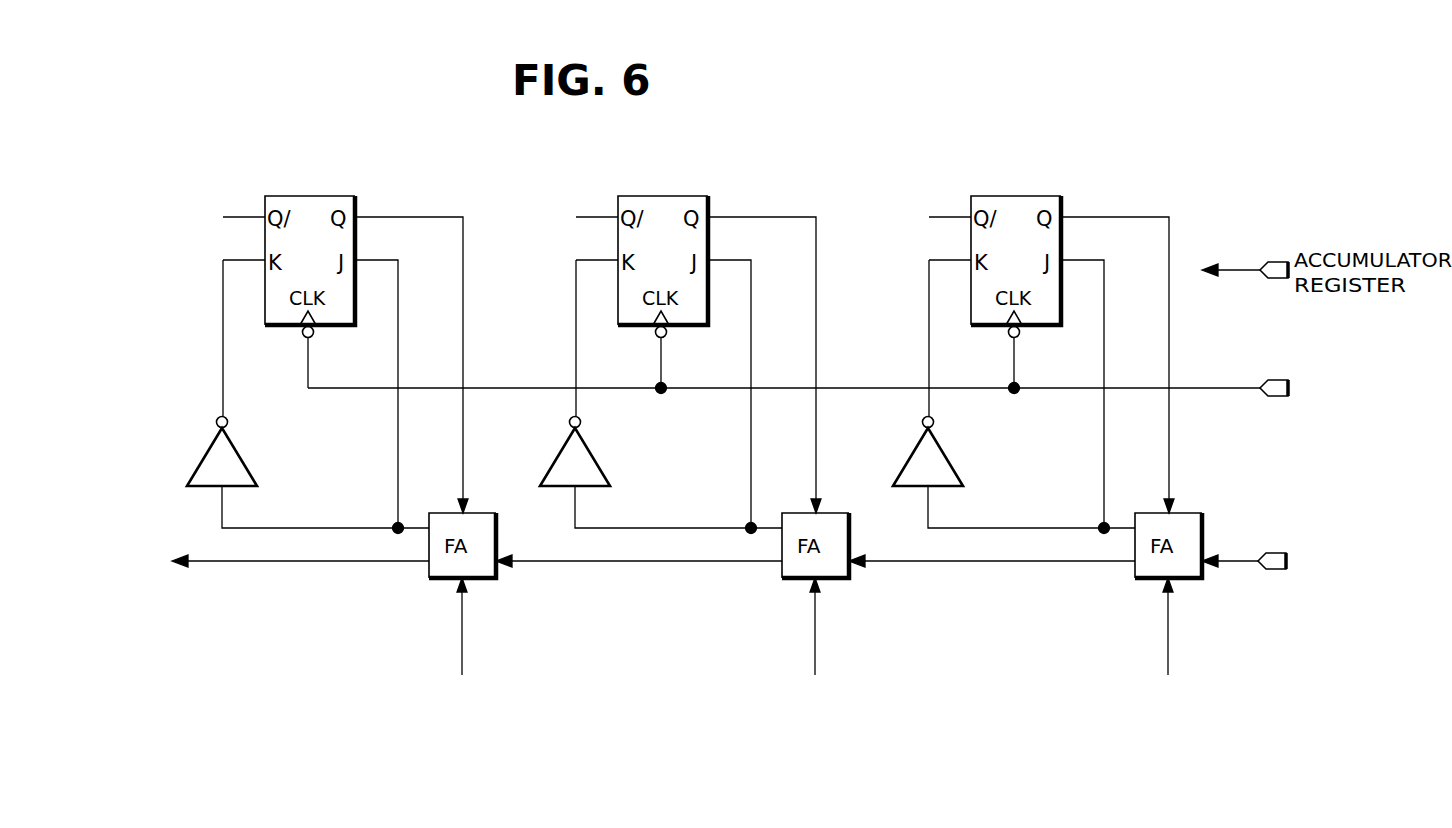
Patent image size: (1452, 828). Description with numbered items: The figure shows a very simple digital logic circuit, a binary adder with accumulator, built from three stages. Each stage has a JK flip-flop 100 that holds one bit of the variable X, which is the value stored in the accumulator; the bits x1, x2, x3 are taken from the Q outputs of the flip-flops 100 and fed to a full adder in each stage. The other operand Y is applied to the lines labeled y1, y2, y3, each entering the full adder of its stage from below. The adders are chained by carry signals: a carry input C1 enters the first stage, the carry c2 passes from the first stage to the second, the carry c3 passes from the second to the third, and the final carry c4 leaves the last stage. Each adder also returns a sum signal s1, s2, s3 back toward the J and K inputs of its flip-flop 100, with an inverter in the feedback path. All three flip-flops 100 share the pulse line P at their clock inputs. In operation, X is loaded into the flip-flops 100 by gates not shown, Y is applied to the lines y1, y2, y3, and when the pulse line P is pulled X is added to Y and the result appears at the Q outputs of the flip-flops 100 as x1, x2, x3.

The JK flip-flops 100 is at (308, 196).
The x3 variable bit x3 is at (424, 351).
The x2 variable bit x2 is at (777, 351).
The x1 variable bit x1 is at (1130, 351).
The sum feedback signal s3 is at (325, 397).
The sum feedback signal s2 is at (678, 397).
The sum feedback signal s1 is at (1031, 397).
The y3 variable bit y3 is at (462, 645).
The y2 variable bit y2 is at (815, 645).
The y1 variable bit y1 is at (1168, 645).
The carry output c4 is at (300, 578).
The carry signal c3 is at (639, 578).
The carry signal c2 is at (992, 578).
The carry input C1 is at (1259, 567).
The pulse line P is at (807, 389).